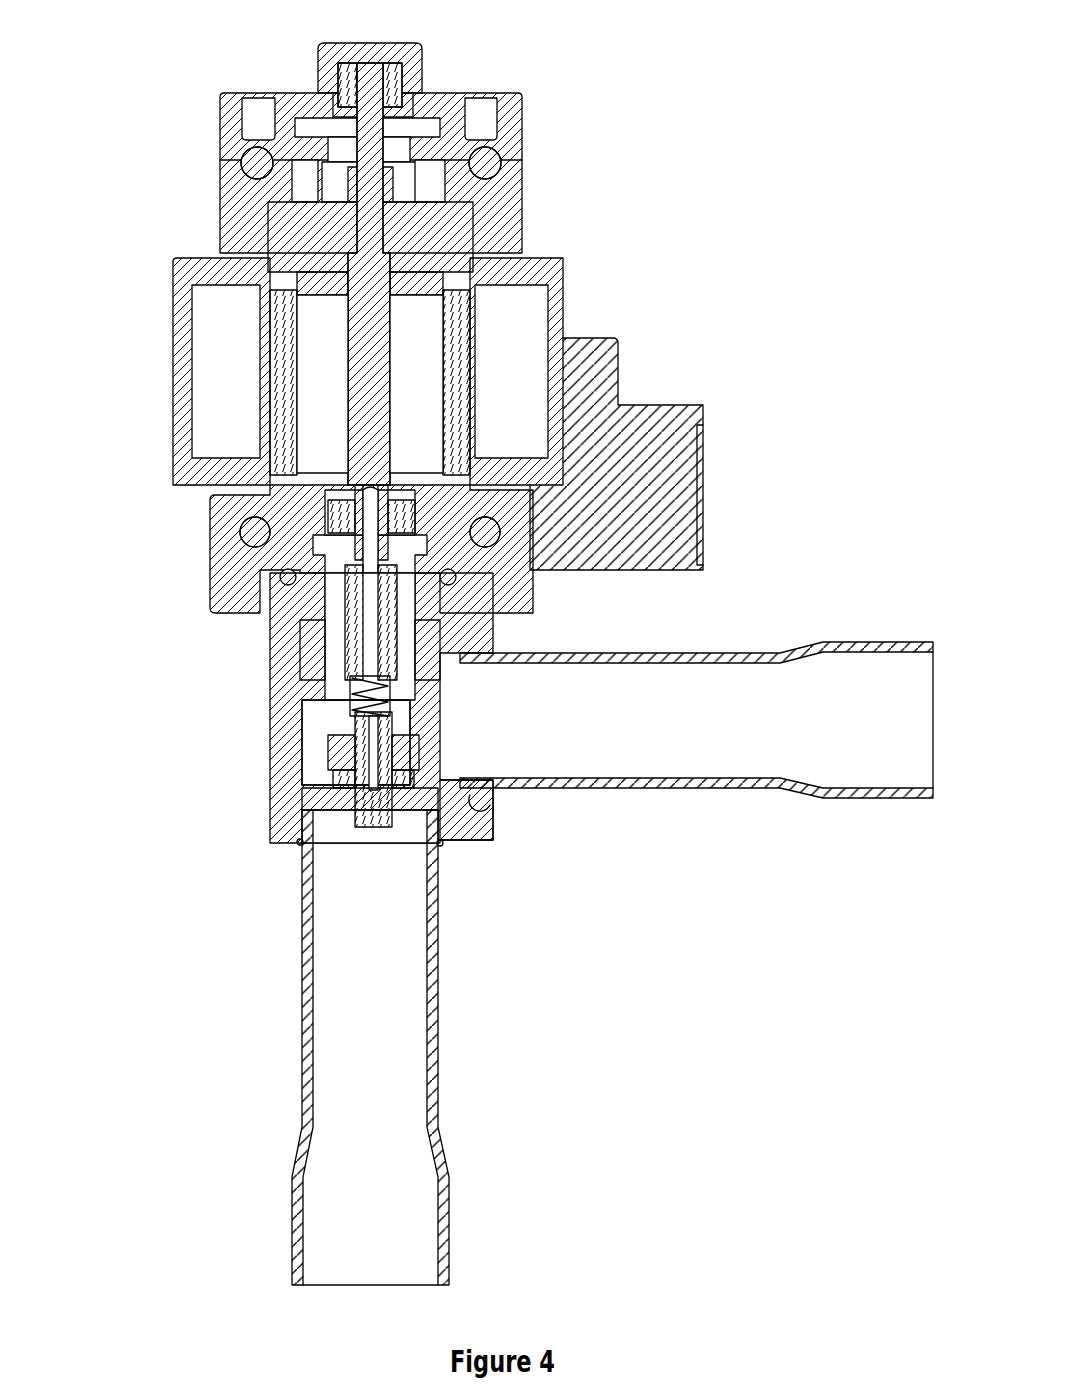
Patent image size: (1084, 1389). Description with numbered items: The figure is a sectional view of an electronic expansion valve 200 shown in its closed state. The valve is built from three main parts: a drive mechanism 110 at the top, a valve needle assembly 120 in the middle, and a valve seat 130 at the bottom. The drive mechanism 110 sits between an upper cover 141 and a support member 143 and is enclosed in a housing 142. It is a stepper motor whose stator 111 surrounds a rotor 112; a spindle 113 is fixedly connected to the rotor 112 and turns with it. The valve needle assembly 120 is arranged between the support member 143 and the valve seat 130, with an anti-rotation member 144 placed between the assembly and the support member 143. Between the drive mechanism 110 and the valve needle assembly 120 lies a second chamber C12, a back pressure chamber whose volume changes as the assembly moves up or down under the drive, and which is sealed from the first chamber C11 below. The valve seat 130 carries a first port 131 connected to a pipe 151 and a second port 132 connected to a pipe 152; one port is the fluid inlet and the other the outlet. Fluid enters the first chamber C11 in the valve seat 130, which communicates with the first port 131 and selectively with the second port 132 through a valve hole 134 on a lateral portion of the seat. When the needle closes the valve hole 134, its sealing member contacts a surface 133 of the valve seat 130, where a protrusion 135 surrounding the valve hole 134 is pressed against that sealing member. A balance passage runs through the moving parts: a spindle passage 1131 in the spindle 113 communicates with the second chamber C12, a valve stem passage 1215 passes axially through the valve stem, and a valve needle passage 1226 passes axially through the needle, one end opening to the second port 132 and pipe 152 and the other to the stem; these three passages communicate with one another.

The electronic expansion valve 200 is at (688, 57).
The drive mechanism 110 is at (682, 268).
The valve needle assembly 120 is at (522, 632).
The upper cover 141 is at (415, 82).
The rotor 112 is at (470, 243).
The spindle 113 is at (362, 285).
The stator 111 is at (508, 322).
The housing 142 is at (612, 370).
The second chamber C12 is at (297, 487).
The spindle passage 1131 is at (335, 505).
The support member 143 is at (290, 558).
The valve stem passage 1215 is at (362, 632).
The anti-rotation member 144 is at (320, 700).
The first chamber C11 is at (313, 737).
The valve seat 130 is at (288, 752).
The surface 133 is at (330, 785).
The protrusion 135 is at (340, 792).
The second port 132 is at (305, 813).
The valve needle passage 1226 is at (370, 805).
The valve hole 134 is at (445, 835).
The first port 131 is at (462, 795).
The pipe 151 is at (897, 640).
The pipe 152 is at (440, 948).